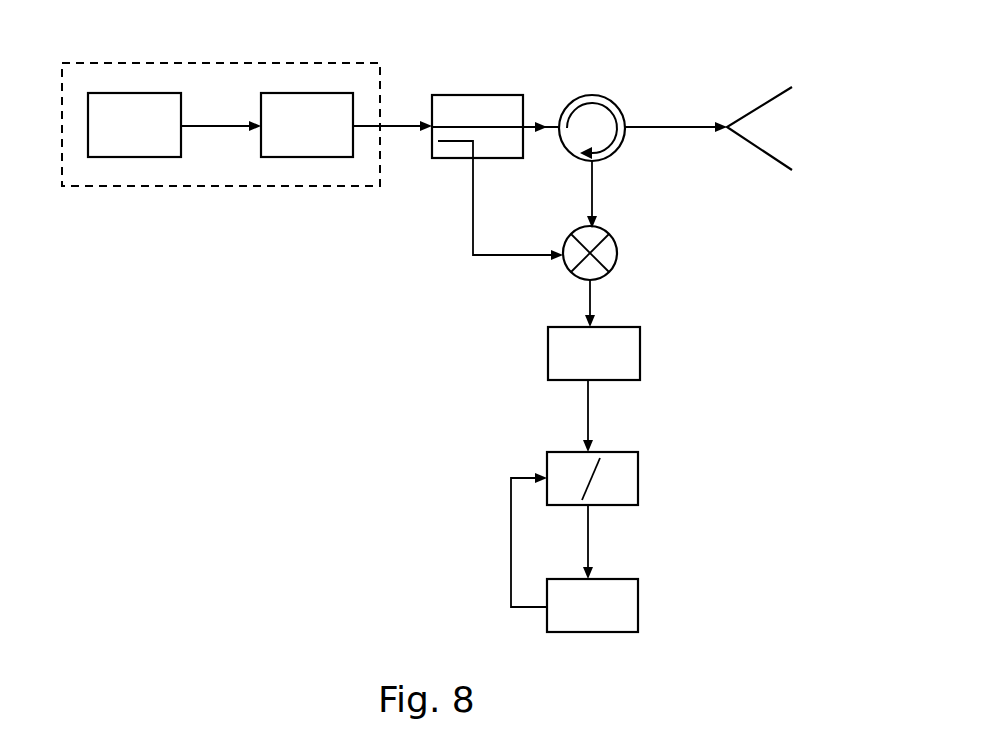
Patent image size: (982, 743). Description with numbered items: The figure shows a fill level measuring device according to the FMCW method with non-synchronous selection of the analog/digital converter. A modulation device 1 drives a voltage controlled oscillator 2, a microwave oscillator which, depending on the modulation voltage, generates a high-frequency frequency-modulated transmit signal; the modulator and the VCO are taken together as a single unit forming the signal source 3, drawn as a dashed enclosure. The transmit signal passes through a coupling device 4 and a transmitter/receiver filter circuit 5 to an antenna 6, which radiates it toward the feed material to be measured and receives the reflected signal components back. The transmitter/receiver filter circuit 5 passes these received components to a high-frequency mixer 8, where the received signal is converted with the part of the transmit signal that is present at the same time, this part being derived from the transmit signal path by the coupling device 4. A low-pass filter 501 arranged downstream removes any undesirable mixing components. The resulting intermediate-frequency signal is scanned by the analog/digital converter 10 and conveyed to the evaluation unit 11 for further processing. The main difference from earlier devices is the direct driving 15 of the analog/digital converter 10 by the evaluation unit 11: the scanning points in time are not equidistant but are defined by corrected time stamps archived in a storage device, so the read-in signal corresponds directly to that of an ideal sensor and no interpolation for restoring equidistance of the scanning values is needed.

The modulation device 1 is at (125, 157).
The voltage controlled oscillator 2 is at (307, 157).
The signal source 3 is at (222, 186).
The coupling device 4 is at (477, 95).
The transmitter/receiver filter circuit 5 is at (595, 97).
The antenna 6 is at (758, 152).
The high-frequency mixer 8 is at (607, 278).
The low-pass filter 501 is at (640, 353).
The analog/digital converter 10 is at (638, 480).
The evaluation unit 11 is at (638, 605).
The direct driving 15 is at (511, 536).